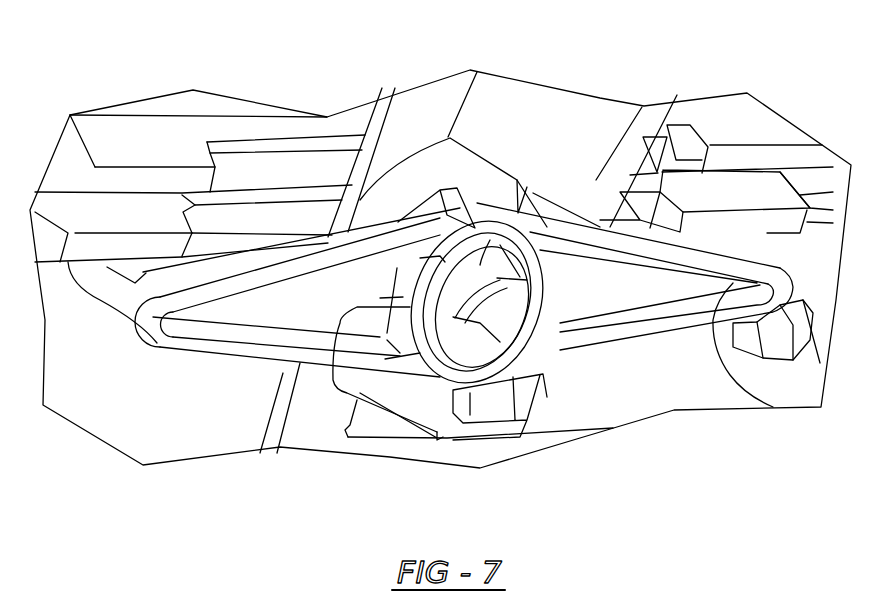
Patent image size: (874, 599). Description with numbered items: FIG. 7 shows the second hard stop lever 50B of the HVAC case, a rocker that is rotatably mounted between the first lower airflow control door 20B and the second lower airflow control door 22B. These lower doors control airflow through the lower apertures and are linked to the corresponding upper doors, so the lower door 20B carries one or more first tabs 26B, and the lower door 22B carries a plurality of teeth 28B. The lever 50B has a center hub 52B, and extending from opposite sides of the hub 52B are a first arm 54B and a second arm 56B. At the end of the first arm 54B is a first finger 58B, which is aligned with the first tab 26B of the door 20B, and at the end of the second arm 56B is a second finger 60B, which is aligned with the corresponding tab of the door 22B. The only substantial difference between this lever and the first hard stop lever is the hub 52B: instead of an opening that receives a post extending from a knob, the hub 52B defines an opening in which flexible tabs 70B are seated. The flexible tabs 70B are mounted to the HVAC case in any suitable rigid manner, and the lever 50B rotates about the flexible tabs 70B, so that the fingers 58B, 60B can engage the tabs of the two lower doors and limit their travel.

The first lower airflow control door 20B is at (223, 413).
The second lower airflow control door 22B is at (661, 365).
The first tabs 26B is at (151, 249).
The teeth 28B is at (746, 220).
The second hard stop lever 50B is at (222, 358).
The hub 52B is at (333, 330).
The first arm 54B is at (183, 313).
The second arm 56B is at (773, 407).
The first finger 58B is at (87, 279).
The second finger 60B is at (737, 240).
The flexible tabs 70B is at (515, 283).